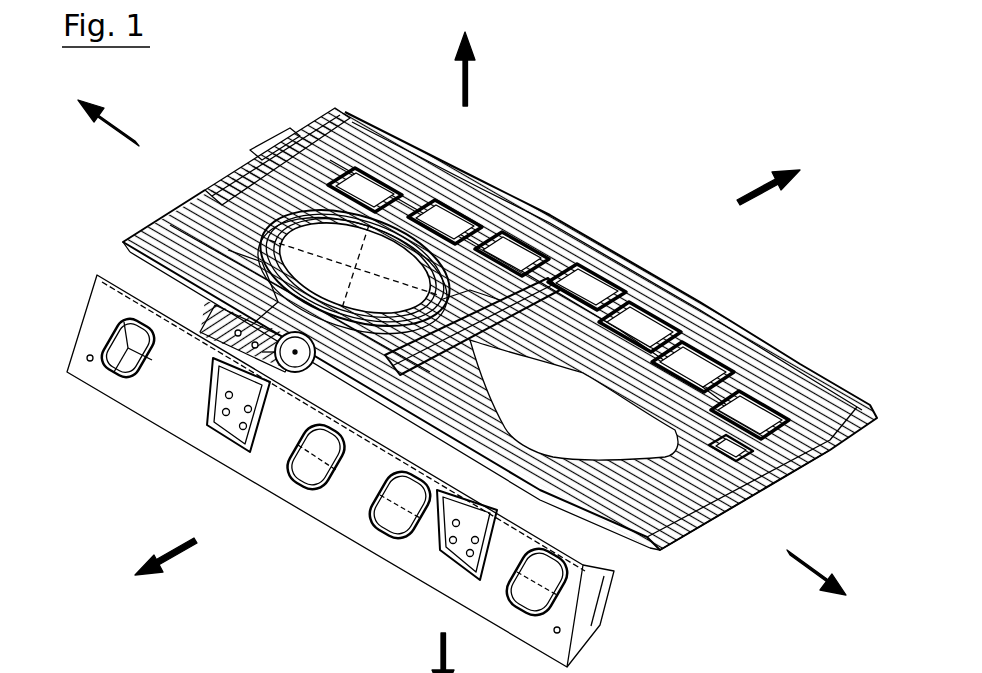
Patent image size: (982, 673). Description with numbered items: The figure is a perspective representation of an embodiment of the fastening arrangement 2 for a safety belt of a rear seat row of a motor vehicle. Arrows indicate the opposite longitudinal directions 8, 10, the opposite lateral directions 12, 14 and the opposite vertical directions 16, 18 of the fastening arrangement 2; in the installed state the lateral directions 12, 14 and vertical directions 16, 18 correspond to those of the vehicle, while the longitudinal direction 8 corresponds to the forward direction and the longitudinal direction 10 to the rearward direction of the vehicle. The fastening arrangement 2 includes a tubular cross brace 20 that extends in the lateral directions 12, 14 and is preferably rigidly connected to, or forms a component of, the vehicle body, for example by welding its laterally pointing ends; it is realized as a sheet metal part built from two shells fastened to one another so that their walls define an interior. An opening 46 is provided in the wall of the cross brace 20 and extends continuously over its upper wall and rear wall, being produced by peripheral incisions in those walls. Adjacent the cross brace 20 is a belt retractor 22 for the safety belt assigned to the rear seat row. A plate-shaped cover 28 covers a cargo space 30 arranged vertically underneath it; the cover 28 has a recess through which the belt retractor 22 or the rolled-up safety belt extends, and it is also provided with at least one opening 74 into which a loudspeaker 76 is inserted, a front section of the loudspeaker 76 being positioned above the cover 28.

The fastening arrangement 2 is at (680, 136).
The longitudinal direction 8 is at (173, 550).
The longitudinal direction 10 is at (748, 193).
The lateral direction 12 is at (118, 133).
The lateral direction 14 is at (803, 560).
The vertical direction 16 is at (458, 83).
The vertical direction 18 is at (438, 652).
The tubular cross brace 20 is at (138, 433).
The belt retractor 22 is at (264, 318).
The plate-shaped cover 28 is at (515, 205).
The cargo space 30 is at (690, 592).
The opening 46 is at (282, 382).
The opening 74 is at (455, 296).
The loudspeaker 76 is at (364, 246).